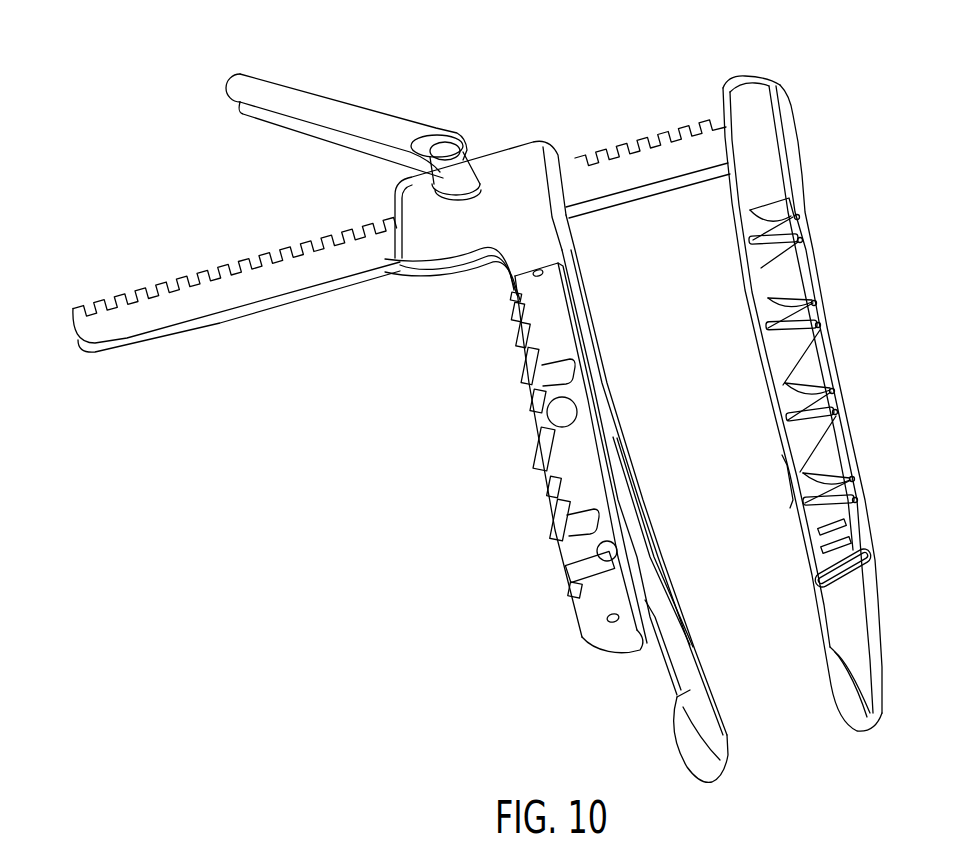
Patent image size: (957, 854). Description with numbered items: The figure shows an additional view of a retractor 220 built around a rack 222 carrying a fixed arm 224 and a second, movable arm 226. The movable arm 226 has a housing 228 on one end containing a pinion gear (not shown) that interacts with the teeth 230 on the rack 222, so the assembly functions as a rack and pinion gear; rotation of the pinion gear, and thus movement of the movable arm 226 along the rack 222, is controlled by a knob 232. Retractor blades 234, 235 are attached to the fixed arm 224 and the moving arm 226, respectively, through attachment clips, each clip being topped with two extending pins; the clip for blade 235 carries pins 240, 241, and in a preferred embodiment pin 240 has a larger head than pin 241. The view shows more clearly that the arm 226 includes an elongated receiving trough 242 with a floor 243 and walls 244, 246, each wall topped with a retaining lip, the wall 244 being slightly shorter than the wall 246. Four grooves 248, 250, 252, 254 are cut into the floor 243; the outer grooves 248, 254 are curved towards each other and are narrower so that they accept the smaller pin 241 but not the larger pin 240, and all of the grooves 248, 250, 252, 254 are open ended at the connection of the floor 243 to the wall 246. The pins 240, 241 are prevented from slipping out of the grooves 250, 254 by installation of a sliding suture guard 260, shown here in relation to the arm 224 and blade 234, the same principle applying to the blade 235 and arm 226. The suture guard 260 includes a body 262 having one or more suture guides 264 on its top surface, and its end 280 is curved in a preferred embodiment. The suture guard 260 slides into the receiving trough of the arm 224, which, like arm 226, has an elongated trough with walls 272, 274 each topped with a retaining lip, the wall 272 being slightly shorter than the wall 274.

The retractor 220 is at (908, 102).
The rack 222 is at (646, 150).
The fixed arm 224 is at (778, 160).
The movable arm 226 is at (547, 228).
The housing 228 is at (508, 158).
The teeth 230 is at (160, 280).
The knob 232 is at (315, 100).
The retractor blade 234 is at (876, 637).
The retractor blade 235 is at (730, 752).
The pin 240 is at (546, 411).
The pin 241 is at (583, 603).
The receiving trough 242 is at (614, 648).
The floor 243 is at (562, 334).
The wall 244 is at (599, 400).
The wall 246 is at (545, 455).
The groove 248 is at (537, 380).
The groove 250 is at (554, 432).
The groove 252 is at (567, 530).
The groove 254 is at (578, 567).
The suture guard 260 is at (814, 363).
The body 262 is at (790, 273).
The suture guide 264 is at (818, 313).
The wall 272 is at (770, 393).
The wall 274 is at (844, 407).
The end 280 is at (872, 578).